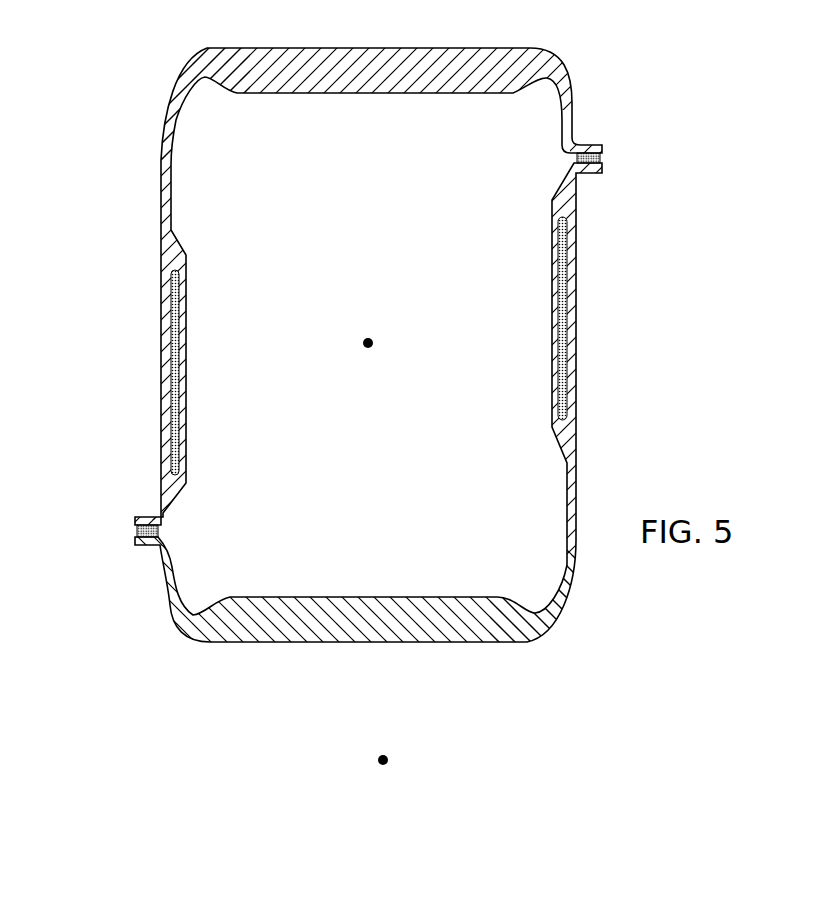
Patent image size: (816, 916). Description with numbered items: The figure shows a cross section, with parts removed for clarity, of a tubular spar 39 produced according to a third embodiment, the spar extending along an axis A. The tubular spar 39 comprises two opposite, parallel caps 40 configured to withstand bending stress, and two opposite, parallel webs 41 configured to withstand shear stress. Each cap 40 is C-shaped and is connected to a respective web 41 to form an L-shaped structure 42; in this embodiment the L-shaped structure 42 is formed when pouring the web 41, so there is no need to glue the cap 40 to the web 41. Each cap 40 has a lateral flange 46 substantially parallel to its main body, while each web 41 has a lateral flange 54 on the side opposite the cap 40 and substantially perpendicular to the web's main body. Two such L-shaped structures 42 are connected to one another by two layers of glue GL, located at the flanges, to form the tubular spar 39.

The tubular spar 39 is at (640, 233).
The cap 40 is at (455, 41).
The web 41 is at (598, 330).
The L-shaped structure 42 is at (150, 66).
The lateral flange 46 is at (593, 147).
The lateral flange 54 is at (592, 174).
The layers of glue GL is at (603, 157).
The axis A is at (376, 336).